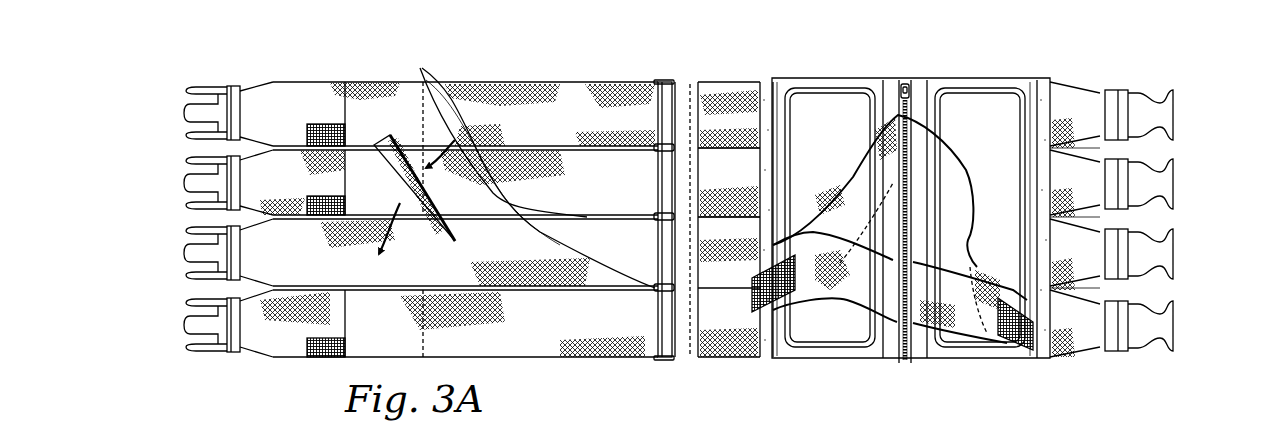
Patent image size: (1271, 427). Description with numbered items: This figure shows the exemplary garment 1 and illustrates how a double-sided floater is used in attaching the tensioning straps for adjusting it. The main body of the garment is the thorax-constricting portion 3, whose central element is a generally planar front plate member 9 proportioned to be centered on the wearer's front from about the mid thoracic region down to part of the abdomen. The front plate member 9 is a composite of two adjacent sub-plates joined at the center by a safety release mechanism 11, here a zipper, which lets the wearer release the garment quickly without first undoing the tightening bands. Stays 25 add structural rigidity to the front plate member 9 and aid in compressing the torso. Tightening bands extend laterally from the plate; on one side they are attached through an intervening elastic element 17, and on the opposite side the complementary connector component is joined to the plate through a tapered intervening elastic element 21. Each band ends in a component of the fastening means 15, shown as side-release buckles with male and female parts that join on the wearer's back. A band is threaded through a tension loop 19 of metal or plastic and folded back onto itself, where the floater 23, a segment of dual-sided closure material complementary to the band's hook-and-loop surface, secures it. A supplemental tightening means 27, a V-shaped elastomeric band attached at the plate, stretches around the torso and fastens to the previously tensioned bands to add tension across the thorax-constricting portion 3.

The carrying harness assembly 1 is at (211, 42).
The thorax-constricting portion 3 is at (696, 56).
The front plate member 9 is at (953, 102).
The safety release mechanism 11 is at (908, 133).
The fastening means 15 is at (185, 185).
The intervening elastic element 17 is at (737, 177).
The tension loop 19 is at (666, 360).
The intervening elastic element 21 is at (1083, 177).
The floater 23 is at (398, 176).
The stays 25 is at (890, 356).
The supplemental tightening means 27 is at (860, 200).